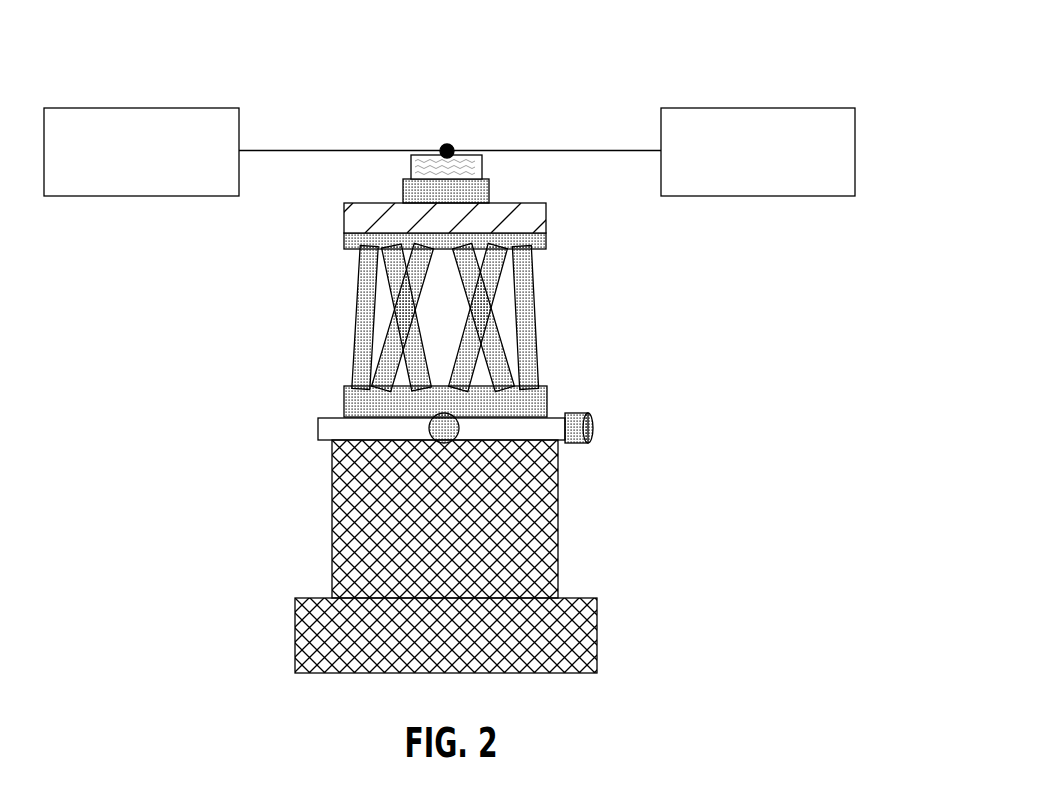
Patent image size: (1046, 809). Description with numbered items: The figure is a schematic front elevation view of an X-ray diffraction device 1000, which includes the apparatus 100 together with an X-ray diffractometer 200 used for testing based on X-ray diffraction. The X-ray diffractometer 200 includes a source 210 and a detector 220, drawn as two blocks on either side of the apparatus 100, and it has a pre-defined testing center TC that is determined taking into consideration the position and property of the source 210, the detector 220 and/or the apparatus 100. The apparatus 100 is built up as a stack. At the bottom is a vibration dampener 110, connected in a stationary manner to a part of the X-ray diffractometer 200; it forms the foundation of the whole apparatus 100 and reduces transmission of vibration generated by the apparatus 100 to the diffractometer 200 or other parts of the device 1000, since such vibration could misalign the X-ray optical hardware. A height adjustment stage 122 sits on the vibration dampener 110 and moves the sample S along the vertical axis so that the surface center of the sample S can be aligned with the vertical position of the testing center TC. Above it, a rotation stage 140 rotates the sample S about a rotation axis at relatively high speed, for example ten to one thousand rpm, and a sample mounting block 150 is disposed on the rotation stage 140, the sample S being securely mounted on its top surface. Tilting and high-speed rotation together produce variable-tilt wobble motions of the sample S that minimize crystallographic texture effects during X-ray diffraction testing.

The X-ray diffractometer 200 is at (479, 99).
The source 210 is at (120, 181).
The detector 220 is at (738, 182).
The apparatus 100 is at (519, 453).
The vibration dampener 110 is at (425, 653).
The height adjustment stage 122 is at (425, 532).
The rotation stage 140 is at (547, 220).
The sample mounting block 150 is at (489, 188).
The sample S is at (410, 166).
The testing center TC is at (447, 150).
The X-ray diffraction device 1000 is at (877, 687).